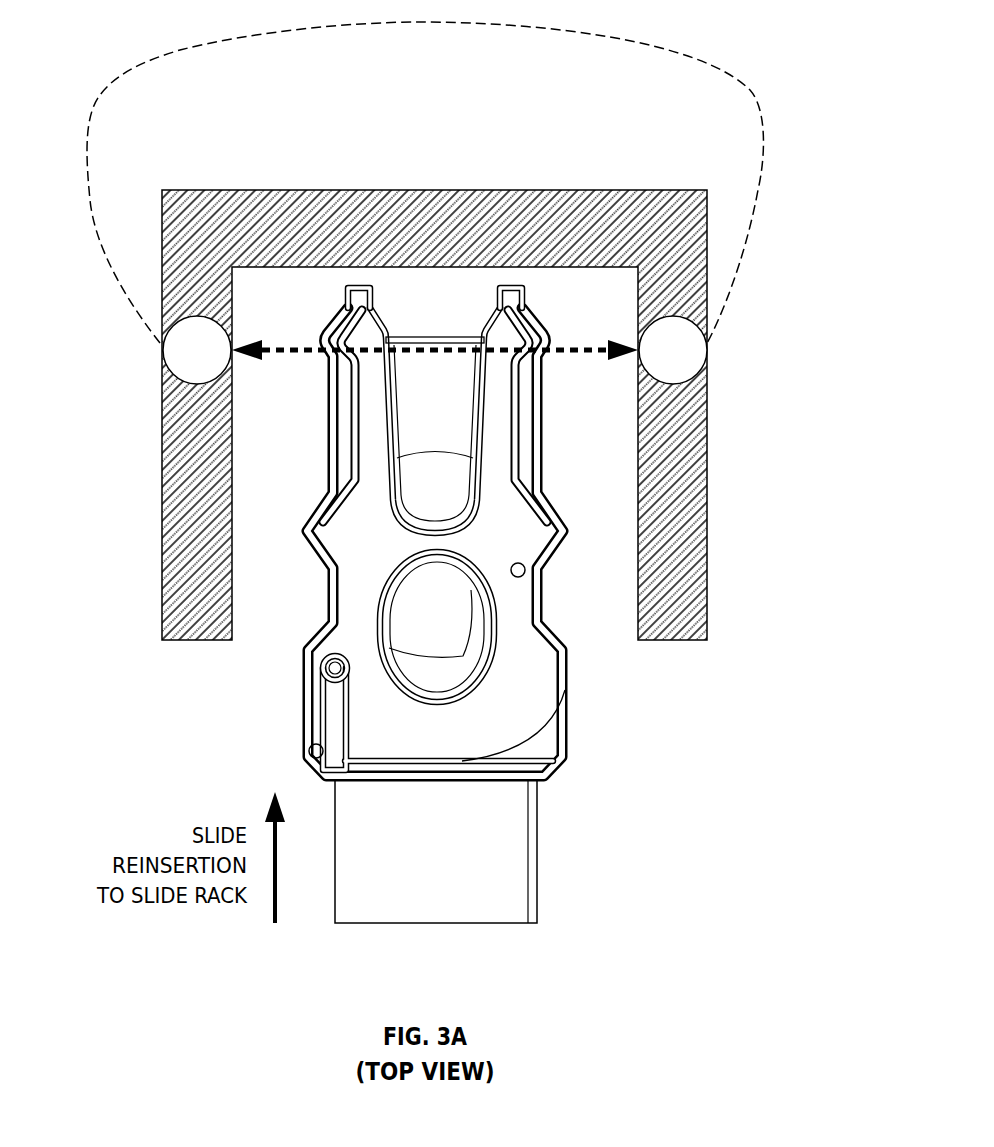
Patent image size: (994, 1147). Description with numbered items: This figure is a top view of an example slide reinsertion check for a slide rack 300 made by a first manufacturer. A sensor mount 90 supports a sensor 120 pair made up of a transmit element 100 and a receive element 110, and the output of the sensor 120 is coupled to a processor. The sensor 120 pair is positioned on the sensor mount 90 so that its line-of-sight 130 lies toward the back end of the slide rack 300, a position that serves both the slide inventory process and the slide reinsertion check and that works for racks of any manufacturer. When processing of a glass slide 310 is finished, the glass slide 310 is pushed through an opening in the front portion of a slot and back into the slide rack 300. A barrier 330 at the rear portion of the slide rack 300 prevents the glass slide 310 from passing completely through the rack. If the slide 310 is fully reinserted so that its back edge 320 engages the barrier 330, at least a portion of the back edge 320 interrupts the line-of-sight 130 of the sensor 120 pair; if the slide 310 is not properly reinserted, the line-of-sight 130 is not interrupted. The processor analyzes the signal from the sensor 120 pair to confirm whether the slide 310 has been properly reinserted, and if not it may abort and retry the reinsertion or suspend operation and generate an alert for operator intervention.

The sensor mount 90 is at (237, 184).
The transmit element 100 is at (160, 342).
The receive element 110 is at (705, 343).
The sensor 120 is at (417, 27).
The line-of-sight 130 is at (313, 353).
The slide rack 300 is at (582, 742).
The glass slide 310 is at (503, 893).
The back edge 320 is at (435, 328).
The barrier 330 is at (357, 287).